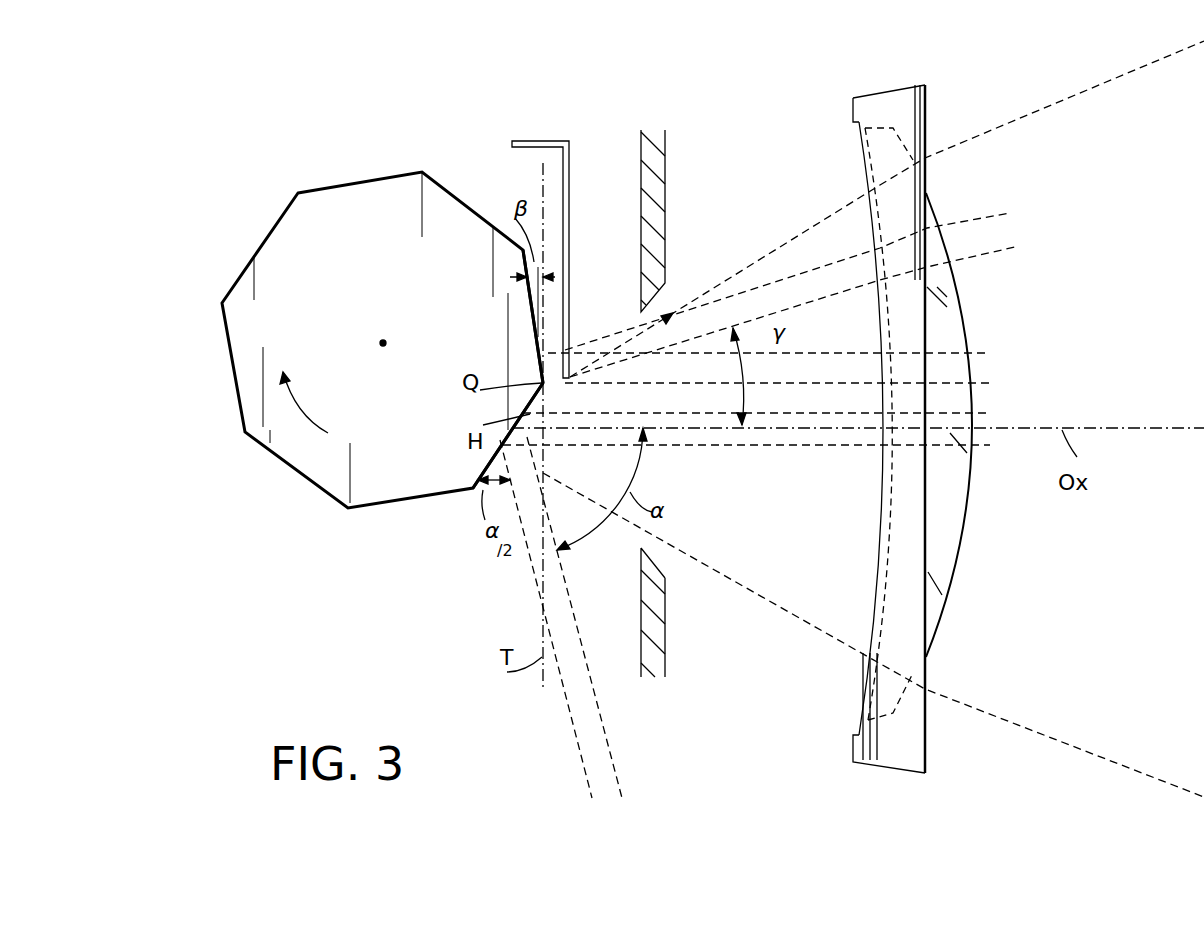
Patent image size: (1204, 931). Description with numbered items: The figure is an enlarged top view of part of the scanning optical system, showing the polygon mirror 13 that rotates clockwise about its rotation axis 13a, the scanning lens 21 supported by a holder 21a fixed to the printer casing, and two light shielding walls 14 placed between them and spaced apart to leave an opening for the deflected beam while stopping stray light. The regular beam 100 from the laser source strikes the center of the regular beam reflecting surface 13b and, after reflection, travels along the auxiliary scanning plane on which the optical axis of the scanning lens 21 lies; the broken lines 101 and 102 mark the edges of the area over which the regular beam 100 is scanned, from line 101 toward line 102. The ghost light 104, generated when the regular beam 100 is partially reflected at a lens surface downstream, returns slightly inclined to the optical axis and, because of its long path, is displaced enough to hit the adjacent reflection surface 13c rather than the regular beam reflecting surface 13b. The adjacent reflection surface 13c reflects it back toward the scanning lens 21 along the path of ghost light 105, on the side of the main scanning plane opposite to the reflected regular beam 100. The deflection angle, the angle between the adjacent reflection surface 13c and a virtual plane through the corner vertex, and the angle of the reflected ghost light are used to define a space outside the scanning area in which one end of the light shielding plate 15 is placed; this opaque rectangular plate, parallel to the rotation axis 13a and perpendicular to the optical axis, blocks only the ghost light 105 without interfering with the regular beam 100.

The polygon mirror 13 is at (337, 468).
The rotation axis 13a is at (383, 343).
The regular beam reflecting surface 13b is at (477, 487).
The adjacent reflection surface 13c is at (537, 300).
The light shielding walls 14 is at (658, 197).
The light shielding plate 15 is at (570, 237).
The scanning lens 21 is at (960, 550).
The holder 21a is at (927, 753).
The regular beam 100 is at (707, 447).
The broken line 101 is at (800, 232).
The broken line 102 is at (797, 620).
The ghost light 104 is at (805, 360).
The ghost light 105 is at (978, 230).